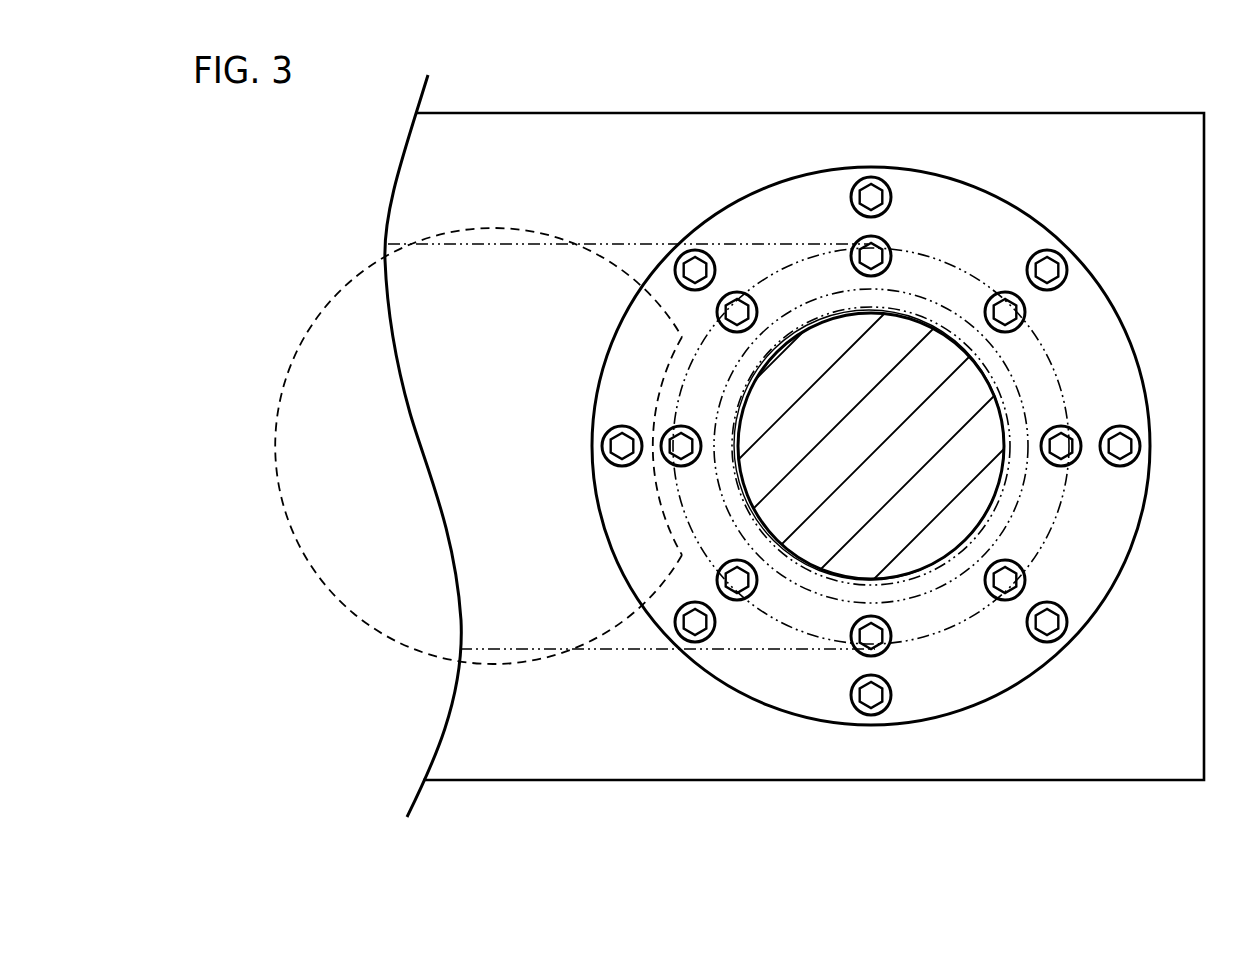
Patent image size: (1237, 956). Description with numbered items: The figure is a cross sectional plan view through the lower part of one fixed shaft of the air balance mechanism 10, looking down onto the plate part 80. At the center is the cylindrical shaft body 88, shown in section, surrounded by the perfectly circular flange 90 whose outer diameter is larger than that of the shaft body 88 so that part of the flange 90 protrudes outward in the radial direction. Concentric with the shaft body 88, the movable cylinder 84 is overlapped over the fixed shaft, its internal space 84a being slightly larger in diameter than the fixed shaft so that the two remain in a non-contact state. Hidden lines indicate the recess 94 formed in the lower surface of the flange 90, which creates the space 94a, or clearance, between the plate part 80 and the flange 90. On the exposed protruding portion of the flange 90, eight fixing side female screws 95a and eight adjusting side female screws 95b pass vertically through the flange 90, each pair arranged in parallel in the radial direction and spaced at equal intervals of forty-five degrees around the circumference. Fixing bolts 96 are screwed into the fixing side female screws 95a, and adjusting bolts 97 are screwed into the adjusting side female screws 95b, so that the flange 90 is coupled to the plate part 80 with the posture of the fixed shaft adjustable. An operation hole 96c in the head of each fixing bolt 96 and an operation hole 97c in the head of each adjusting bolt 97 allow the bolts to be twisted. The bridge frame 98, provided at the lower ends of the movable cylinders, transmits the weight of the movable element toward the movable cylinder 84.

The air balance mechanism 10 is at (338, 173).
The plate part 80 is at (857, 113).
The movable cylinder 84 is at (1008, 525).
The internal space 84a is at (995, 487).
The shaft body 88 is at (962, 387).
The flange 90 is at (694, 227).
The recess 94 is at (811, 235).
The space 94a is at (778, 270).
The fixing side female screw 95a is at (677, 283).
The adjusting side female screw 95b is at (673, 351).
The fixing bolt 96 is at (695, 622).
The operation hole 96c is at (628, 455).
The adjusting bolt 97 is at (1003, 308).
The operation hole 97c is at (678, 450).
The bridge frame 98 is at (573, 651).